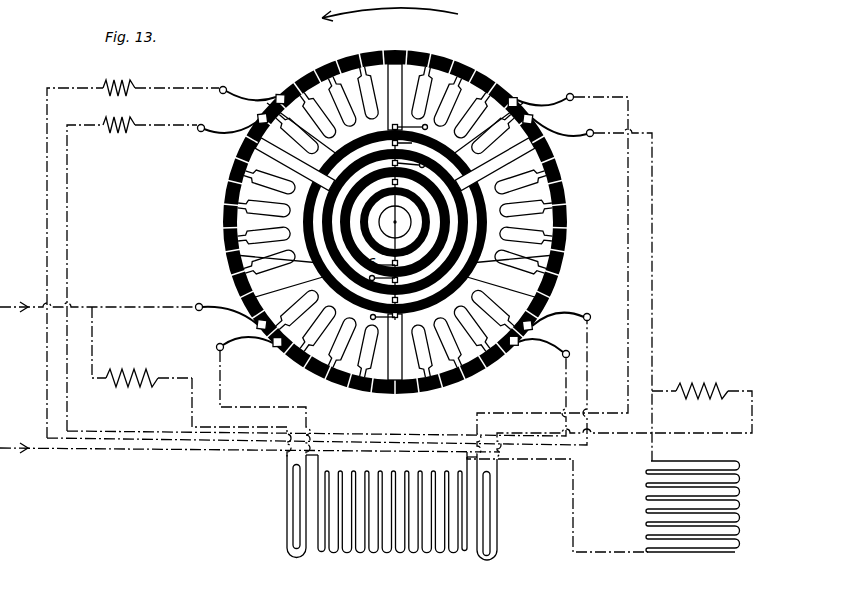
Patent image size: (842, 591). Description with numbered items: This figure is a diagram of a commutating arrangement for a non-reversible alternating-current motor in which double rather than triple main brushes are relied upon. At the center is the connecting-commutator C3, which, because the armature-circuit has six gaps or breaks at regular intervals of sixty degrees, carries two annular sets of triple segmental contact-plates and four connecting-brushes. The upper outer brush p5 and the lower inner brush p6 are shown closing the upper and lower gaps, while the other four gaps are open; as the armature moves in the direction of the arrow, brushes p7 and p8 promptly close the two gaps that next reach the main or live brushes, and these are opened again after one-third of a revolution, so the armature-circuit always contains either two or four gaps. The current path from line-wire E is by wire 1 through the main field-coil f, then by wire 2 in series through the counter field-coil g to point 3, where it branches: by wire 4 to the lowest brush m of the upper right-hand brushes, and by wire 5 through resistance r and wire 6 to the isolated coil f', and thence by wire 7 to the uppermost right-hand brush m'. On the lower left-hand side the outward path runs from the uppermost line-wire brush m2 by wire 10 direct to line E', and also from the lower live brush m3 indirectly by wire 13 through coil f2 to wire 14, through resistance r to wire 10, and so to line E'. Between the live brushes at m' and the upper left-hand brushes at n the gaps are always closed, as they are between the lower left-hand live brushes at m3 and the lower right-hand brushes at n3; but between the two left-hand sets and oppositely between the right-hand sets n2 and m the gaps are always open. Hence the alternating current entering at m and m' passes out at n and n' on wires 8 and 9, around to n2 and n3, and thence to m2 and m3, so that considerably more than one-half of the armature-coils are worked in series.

The wire 1 is at (253, 455).
The wire 2 is at (550, 502).
The branch point 3 is at (657, 390).
The wire 4 is at (630, 290).
The wire 5 is at (694, 386).
The wire 6 is at (625, 417).
The wire 7 is at (552, 277).
The wire 8 is at (315, 270).
The wire 9 is at (316, 276).
The wire 10 is at (149, 317).
The wire 13 is at (265, 403).
The wire 14 is at (241, 418).
The upper left-hand brush n is at (253, 84).
The upper left-hand brush n' is at (233, 117).
The lower right-hand brush n2 is at (556, 315).
The lower right-hand brush n3 is at (539, 356).
The lowest brush of the upper right-hand brushes m is at (558, 125).
The uppermost right-hand brush m' is at (540, 90).
The uppermost line-wire brush m2 is at (231, 319).
The lower live brush m3 is at (250, 354).
The upper outer brush p5 is at (422, 126).
The lower inner brush p6 is at (372, 278).
The connecting-brush p7 is at (468, 145).
The connecting-brush p8 is at (368, 316).
The connecting-commutator C3 is at (395, 222).
The line-wire E is at (250, 435).
The line E' is at (97, 297).
The main field-coil f is at (392, 504).
The isolated coil f' is at (493, 509).
The coil f2 is at (286, 506).
The counter field-coil g is at (693, 506).
The resistance r is at (399, 347).